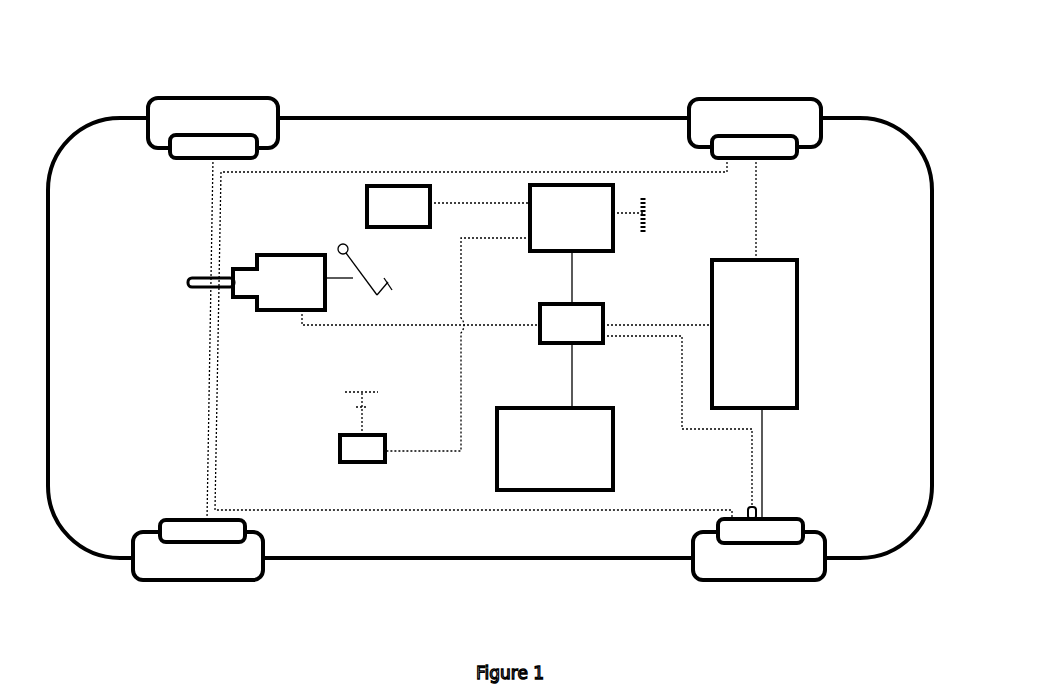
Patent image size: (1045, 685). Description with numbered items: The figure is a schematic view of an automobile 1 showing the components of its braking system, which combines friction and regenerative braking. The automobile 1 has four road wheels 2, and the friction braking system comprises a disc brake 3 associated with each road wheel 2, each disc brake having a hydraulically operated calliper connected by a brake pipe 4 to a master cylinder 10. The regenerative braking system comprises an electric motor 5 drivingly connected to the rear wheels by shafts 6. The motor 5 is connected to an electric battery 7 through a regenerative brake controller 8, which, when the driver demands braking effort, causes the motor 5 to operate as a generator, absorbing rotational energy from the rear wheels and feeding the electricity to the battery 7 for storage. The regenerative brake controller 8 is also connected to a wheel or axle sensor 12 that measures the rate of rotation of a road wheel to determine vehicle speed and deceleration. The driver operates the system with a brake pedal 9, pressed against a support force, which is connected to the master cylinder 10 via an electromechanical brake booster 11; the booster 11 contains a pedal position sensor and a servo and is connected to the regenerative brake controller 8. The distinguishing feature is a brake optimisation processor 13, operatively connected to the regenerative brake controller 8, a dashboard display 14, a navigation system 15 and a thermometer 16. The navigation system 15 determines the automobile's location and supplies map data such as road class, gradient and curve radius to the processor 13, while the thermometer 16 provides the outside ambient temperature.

The automobile 1 is at (320, 86).
The road wheel 2 is at (192, 580).
The disc brake 3 is at (185, 520).
The brake pipe 4 is at (207, 385).
The electric motor 5 is at (797, 294).
The shaft 6 is at (758, 435).
The electric battery 7 is at (555, 449).
The regenerative brake controller 8 is at (571, 323).
The brake pedal 9 is at (353, 265).
The master cylinder 10 is at (185, 283).
The electromechanical brake booster 11 is at (283, 313).
The wheel sensor 12 is at (750, 507).
The brake optimisation processor 13 is at (571, 218).
The dashboard display 14 is at (417, 186).
The navigation system 15 is at (362, 427).
The thermometer 16 is at (647, 210).